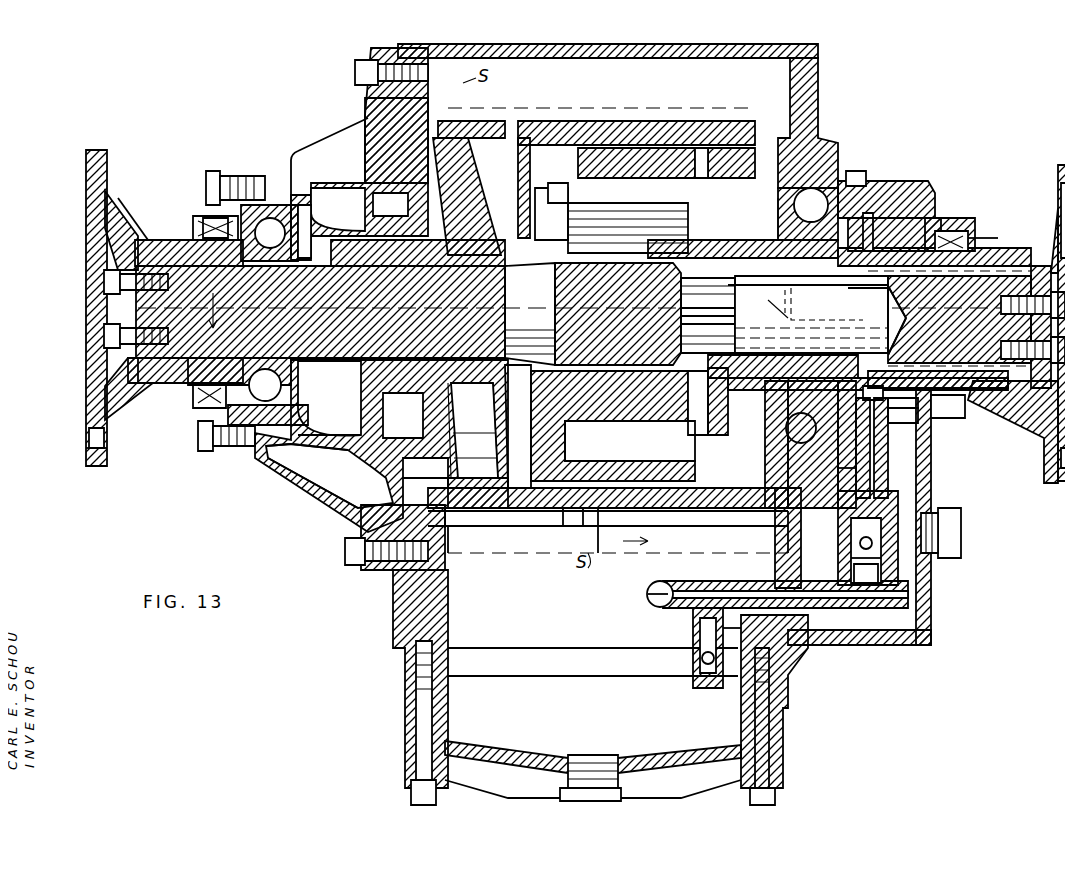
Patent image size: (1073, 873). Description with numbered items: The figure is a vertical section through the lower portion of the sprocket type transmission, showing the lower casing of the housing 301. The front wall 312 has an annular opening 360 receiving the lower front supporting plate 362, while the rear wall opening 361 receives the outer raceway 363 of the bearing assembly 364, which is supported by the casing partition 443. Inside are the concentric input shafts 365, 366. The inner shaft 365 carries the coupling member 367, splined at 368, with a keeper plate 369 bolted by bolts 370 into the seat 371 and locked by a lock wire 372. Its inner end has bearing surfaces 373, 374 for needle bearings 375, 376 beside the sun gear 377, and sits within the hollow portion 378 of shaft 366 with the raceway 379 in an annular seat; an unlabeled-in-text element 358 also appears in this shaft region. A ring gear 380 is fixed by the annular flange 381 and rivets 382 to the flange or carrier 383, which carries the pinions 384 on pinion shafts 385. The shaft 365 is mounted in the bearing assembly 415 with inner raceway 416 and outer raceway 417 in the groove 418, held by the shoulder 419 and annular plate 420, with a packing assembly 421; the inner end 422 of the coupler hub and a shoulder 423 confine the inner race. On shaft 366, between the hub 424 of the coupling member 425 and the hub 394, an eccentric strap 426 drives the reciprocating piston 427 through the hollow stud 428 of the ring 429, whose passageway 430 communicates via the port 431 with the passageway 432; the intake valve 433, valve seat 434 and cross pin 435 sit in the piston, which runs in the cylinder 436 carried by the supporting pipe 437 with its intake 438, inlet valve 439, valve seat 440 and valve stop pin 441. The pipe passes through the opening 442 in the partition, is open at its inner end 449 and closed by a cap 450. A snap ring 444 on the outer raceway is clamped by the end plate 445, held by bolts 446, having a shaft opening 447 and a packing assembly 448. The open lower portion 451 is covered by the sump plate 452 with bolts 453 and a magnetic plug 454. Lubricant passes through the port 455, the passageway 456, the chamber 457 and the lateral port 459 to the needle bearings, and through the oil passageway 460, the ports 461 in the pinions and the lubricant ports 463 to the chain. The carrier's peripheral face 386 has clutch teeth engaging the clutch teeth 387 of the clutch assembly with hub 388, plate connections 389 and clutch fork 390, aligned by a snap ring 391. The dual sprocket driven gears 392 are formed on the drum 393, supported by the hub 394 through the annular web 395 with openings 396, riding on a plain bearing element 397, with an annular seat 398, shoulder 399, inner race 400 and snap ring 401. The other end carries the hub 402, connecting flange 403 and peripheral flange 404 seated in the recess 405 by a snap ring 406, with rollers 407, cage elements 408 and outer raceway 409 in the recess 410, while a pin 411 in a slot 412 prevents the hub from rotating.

The housing 301 is at (462, 596).
The front wall 312 is at (395, 578).
The sleeve 358 is at (764, 298).
The annular opening 360 is at (470, 548).
The annular opening 361 is at (812, 150).
The lower front supporting plate 362 is at (385, 123).
The outer raceway 363 is at (850, 180).
The bearing assembly 364 is at (806, 197).
The input shaft 365 is at (540, 286).
The input shaft 366 is at (980, 283).
The coupling member 367 is at (95, 412).
The spline 368 is at (160, 378).
The keeper plate 369 is at (118, 348).
The bolts 370 is at (96, 274).
The annular groove or seat 371 is at (135, 235).
The lock wire 372 is at (96, 296).
The bearing surface 373 is at (765, 310).
The bearing surface 374 is at (835, 301).
The needle bearing 375 is at (708, 315).
The needle bearing 376 is at (838, 290).
The sun gear 377 is at (545, 360).
The hollow portion 378 is at (765, 350).
The raceway 379 is at (890, 345).
The ring gear 380 is at (650, 135).
The annular flange 381 is at (712, 306).
The rivets 382 is at (712, 152).
The carrier or spider 383 is at (748, 355).
The pinions 384 is at (640, 225).
The pinion shafts 385 is at (530, 225).
The annular peripheral face 386 is at (577, 517).
The clutch teeth 387 is at (520, 420).
The hub 388 is at (466, 430).
The plate connections 389 is at (478, 430).
The clutch fork 390 is at (329, 434).
The snap ring 391 is at (588, 525).
The dual sprocket driven gears 392 is at (488, 518).
The drum 393 is at (672, 440).
The hub 394 is at (835, 425).
The annular web 395 is at (770, 444).
The openings 396 is at (868, 383).
The plain bearing element 397 is at (903, 403).
The annular seat 398 is at (820, 262).
The shoulder 399 is at (770, 180).
The inner race 400 is at (868, 210).
The snap ring 401 is at (812, 444).
The hub 402 is at (472, 408).
The connecting flange 403 is at (474, 442).
The peripheral flange 404 is at (479, 472).
The annular recess 405 is at (452, 500).
The snap ring 406 is at (475, 458).
The rollers 407 is at (350, 452).
The cage elements 408 is at (320, 442).
The outer raceway 409 is at (372, 490).
The annular recess 410 is at (425, 482).
The pin 411 is at (470, 113).
The slot 412 is at (462, 138).
The bearing assembly 415 is at (292, 210).
The inner raceway 416 is at (280, 226).
The outer raceway 417 is at (258, 190).
The annular groove 418 is at (268, 195).
The shoulder 419 is at (290, 195).
The annular plate 420 is at (200, 208).
The packing assembly 421 is at (190, 215).
The inner end 422 is at (400, 430).
The shoulder 423 is at (320, 410).
The hub 424 is at (962, 232).
The coupling member 425 is at (1050, 210).
The eccentric strap 426 is at (958, 222).
The reciprocating piston 427 is at (870, 445).
The hollow stud 428 is at (903, 417).
The ring 429 is at (935, 210).
The lubricant passageway 430 is at (885, 215).
The port 431 is at (875, 393).
The passageway 432 is at (875, 465).
The intake valve 433 is at (866, 573).
The valve seat 434 is at (851, 537).
The cross pin 435 is at (845, 520).
The cylinder 436 is at (843, 555).
The supporting pipe 437 is at (820, 632).
The intake 438 is at (685, 620).
The inlet valve 439 is at (692, 651).
The valve seat 440 is at (695, 675).
The valve stop pin 441 is at (725, 630).
The opening 442 is at (785, 660).
The casing partition 443 is at (765, 515).
The snap ring 444 is at (837, 472).
The end plate 445 is at (920, 455).
The bolts 446 is at (845, 163).
The shaft opening 447 is at (970, 415).
The packing assembly 448 is at (972, 242).
The open inner end 449 is at (675, 578).
The cap 450 is at (642, 588).
The open lower portion 451 is at (610, 672).
The sump plate 452 is at (528, 745).
The bolts 453 is at (416, 702).
The magnetic plug 454 is at (590, 795).
The port 455 is at (895, 270).
The passageway 456 is at (896, 290).
The chamber 457 is at (902, 310).
The lateral port 459 is at (827, 302).
The oil passageway 460 is at (778, 255).
The ports 461 is at (596, 200).
The lubricant ports 463 is at (513, 114).